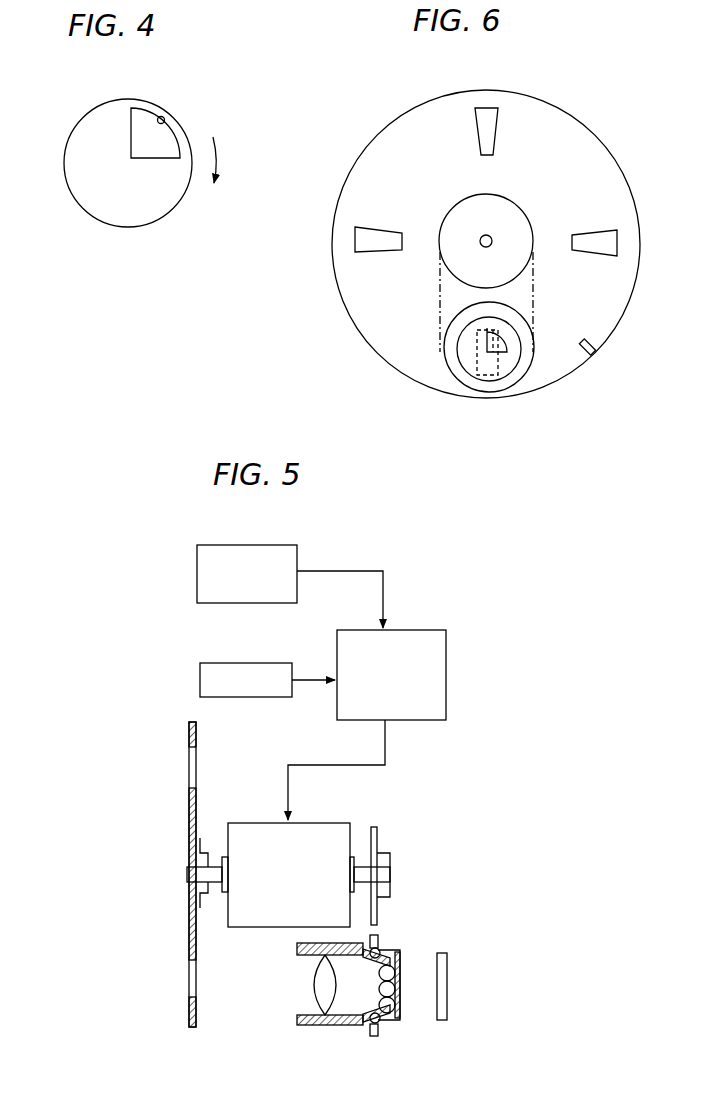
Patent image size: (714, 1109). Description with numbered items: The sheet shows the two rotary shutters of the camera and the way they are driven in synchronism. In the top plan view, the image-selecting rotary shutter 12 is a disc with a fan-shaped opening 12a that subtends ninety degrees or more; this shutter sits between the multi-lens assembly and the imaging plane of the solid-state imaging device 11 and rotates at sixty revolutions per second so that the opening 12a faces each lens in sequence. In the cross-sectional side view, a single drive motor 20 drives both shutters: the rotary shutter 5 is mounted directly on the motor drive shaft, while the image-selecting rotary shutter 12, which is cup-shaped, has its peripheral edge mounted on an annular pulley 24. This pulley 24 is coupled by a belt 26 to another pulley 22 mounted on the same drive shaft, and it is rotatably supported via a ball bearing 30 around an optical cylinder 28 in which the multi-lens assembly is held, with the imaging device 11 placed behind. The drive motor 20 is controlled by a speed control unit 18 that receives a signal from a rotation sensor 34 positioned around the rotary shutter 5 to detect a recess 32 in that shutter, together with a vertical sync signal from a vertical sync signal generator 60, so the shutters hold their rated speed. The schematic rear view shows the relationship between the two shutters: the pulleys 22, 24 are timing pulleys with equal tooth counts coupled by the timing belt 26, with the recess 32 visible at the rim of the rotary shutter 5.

In FIG. 4, the image-selecting rotary shutter 12 is at (51, 127).
In FIG. 5, the image-selecting rotary shutter 12 is at (400, 1015).
In FIG. 4, the opening 12a is at (164, 122).
In FIG. 6, the rotary shutter 5 is at (555, 106).
In FIG. 5, the rotary shutter 5 is at (189, 808).
In FIG. 6, the pulley 22 is at (530, 217).
In FIG. 5, the pulley 22 is at (378, 838).
In FIG. 6, the pulley 24 is at (527, 323).
In FIG. 5, the pulley 24 is at (383, 1030).
In FIG. 6, the belt 26 is at (440, 293).
In FIG. 6, the recess 32 is at (595, 350).
In FIG. 5, the vertical sync signal generator 60 is at (197, 571).
In FIG. 5, the speed control unit 18 is at (446, 652).
In FIG. 5, the rotation sensor 34 is at (200, 680).
In FIG. 5, the drive motor 20 is at (250, 823).
In FIG. 5, the ball bearing 30 is at (380, 948).
In FIG. 5, the optical cylinder 28 is at (325, 1027).
In FIG. 5, the solid-state imaging device 11 is at (447, 975).